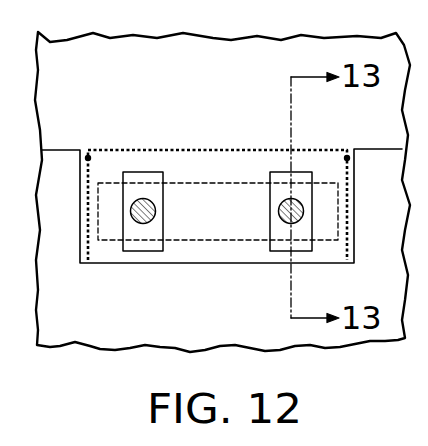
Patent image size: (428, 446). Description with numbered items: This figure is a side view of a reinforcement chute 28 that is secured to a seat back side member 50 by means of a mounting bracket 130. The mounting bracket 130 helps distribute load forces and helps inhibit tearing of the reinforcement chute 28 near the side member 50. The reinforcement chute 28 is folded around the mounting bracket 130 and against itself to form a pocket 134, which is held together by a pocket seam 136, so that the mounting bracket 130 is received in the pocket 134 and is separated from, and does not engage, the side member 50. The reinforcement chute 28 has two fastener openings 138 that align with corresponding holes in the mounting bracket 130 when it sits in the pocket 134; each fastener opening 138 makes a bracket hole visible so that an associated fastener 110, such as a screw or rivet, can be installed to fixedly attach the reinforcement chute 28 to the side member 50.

The reinforcement chute 28 is at (224, 80).
The seat back side member 50 is at (163, 330).
The fastener 110 is at (136, 221).
The mounting bracket 130 is at (208, 210).
The pocket 134 is at (224, 168).
The pocket seam 136 is at (190, 148).
The fastener opening 138 is at (143, 172).